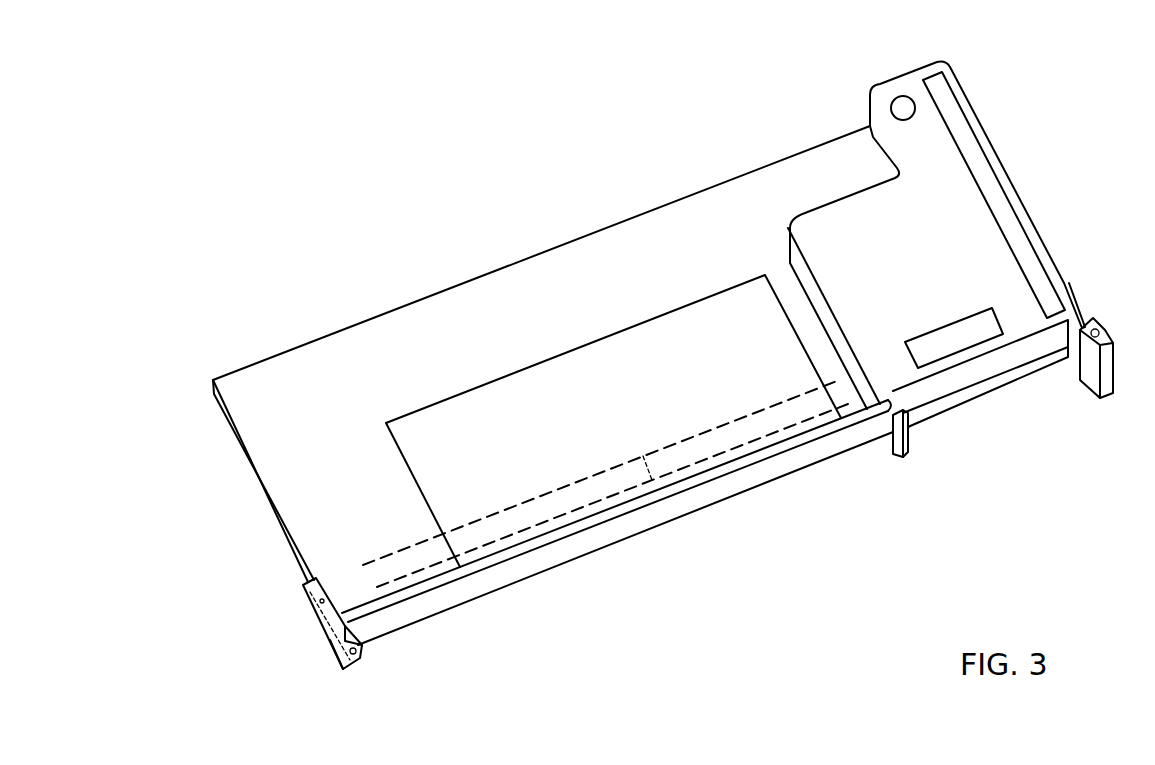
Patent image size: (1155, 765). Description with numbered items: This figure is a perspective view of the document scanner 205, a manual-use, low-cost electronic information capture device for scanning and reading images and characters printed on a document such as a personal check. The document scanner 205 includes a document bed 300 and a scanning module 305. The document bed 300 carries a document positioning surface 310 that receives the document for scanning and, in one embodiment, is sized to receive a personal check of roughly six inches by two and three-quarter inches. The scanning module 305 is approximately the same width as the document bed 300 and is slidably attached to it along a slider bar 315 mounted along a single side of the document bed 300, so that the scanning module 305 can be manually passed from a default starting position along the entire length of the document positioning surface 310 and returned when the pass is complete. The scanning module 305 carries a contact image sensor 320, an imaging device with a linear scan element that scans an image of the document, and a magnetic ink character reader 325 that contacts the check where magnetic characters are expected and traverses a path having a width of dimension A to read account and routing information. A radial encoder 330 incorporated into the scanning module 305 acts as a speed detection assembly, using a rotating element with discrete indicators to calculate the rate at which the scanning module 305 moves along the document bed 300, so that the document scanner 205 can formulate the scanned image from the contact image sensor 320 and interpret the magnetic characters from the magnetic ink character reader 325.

The document scanner 205 is at (863, 526).
The document bed 300 is at (323, 363).
The scanning module 305 is at (820, 199).
The document positioning surface 310 is at (537, 398).
The slider bar 315 is at (698, 496).
The contact image sensor (CIS) 320 is at (897, 95).
The magnetic ink character reader (MICR) 325 is at (963, 335).
The radial encoder 330 is at (935, 200).
The dimension A is at (644, 460).